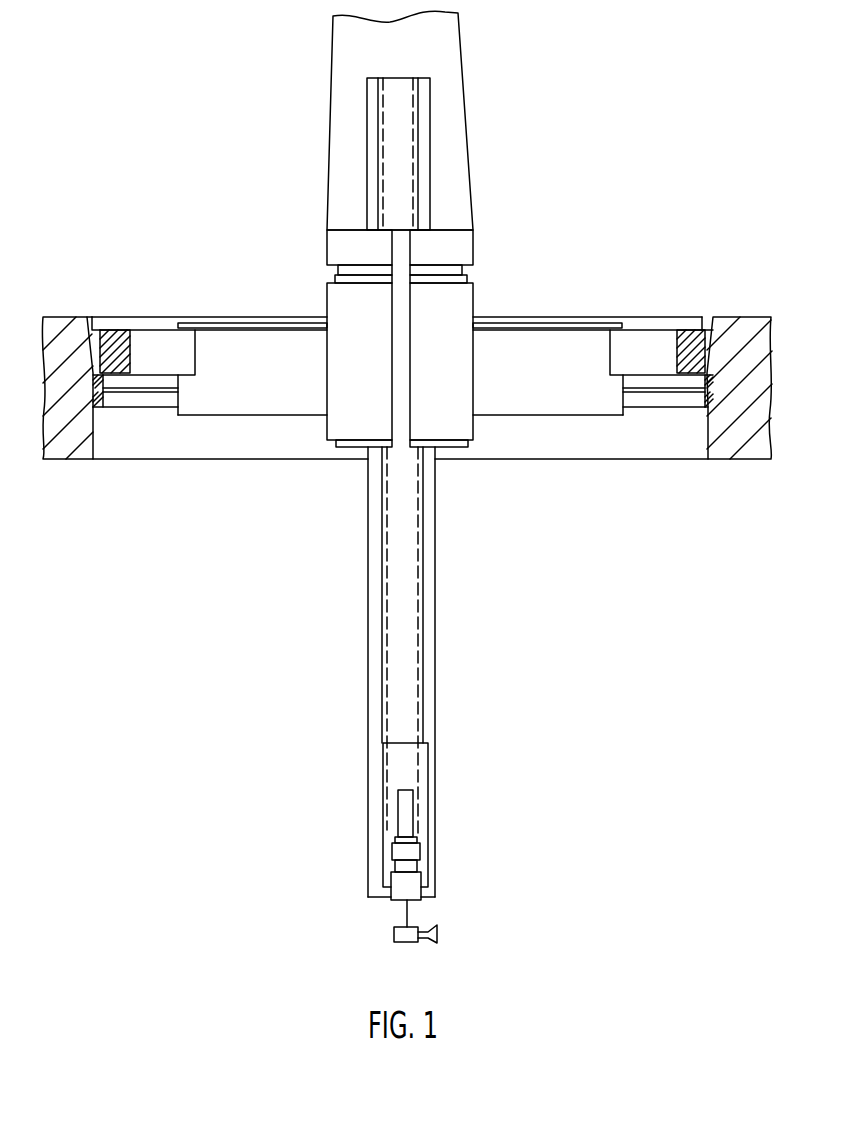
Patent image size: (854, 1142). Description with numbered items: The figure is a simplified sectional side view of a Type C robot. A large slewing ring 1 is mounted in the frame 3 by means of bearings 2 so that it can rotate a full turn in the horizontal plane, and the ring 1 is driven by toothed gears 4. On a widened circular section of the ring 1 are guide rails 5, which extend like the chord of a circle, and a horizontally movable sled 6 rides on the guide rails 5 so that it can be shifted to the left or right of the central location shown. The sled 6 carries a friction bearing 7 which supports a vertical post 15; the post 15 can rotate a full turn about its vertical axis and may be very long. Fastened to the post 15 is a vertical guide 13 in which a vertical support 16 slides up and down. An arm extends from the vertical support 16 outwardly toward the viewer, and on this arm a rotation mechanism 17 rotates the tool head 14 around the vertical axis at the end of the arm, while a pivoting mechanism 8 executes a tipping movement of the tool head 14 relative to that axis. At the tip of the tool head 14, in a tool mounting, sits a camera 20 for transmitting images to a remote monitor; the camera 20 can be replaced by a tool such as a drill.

The slewing ring 1 is at (118, 345).
The bearings 2 is at (708, 380).
The frame 3 is at (755, 343).
The toothed gears 4 is at (96, 328).
The guide rails 5 is at (277, 355).
The horizontally movable sled 6 is at (357, 342).
The friction bearing 7 is at (462, 278).
The pivoting mechanism 8 is at (400, 877).
The vertical guide 13 is at (408, 706).
The tool head 14 is at (405, 805).
The vertical post 15 is at (378, 668).
The vertical support 16 is at (410, 758).
The rotation mechanism 17 is at (415, 850).
The camera 20 is at (408, 943).